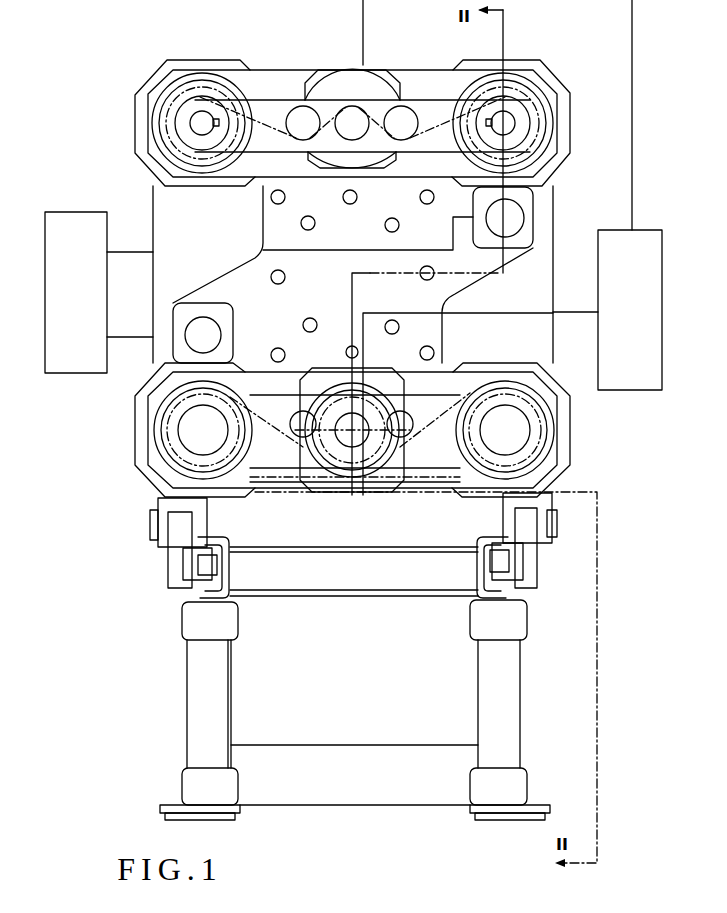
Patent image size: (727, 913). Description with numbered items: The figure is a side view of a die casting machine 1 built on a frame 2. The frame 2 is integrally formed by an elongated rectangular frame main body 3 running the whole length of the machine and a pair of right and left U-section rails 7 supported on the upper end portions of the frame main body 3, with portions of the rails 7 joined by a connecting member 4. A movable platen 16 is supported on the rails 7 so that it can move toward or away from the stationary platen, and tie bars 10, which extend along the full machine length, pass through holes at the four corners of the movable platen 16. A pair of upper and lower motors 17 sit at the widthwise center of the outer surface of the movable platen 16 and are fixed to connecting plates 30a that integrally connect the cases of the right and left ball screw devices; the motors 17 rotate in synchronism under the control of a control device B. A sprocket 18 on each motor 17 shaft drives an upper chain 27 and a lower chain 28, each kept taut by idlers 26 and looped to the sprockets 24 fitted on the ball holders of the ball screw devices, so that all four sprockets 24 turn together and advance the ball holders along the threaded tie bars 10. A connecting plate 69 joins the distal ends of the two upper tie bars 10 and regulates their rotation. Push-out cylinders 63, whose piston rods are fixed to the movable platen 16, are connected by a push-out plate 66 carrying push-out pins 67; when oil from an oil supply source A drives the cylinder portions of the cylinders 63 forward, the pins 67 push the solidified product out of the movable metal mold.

The die casting machine 1 is at (573, 62).
The frame 2 is at (550, 600).
The frame main body 3 is at (521, 699).
The connecting member 4 is at (365, 552).
The rail 7 is at (232, 545).
The tie bar 10 is at (200, 117).
The movable platen 16 is at (562, 213).
The motor 17 is at (387, 72).
The sprocket 18 is at (345, 145).
The sprocket 24 is at (222, 92).
The idler 26 is at (298, 106).
The upper chain 27 is at (405, 172).
The lower chain 28 is at (428, 485).
The connecting plate 30a is at (262, 70).
The push-out cylinder 63 is at (512, 252).
The push-out plate 66 is at (472, 288).
The push-out pin 67 is at (270, 277).
The connecting plate 69 is at (333, 72).
The oil supply source A is at (65, 212).
The control device B is at (650, 230).